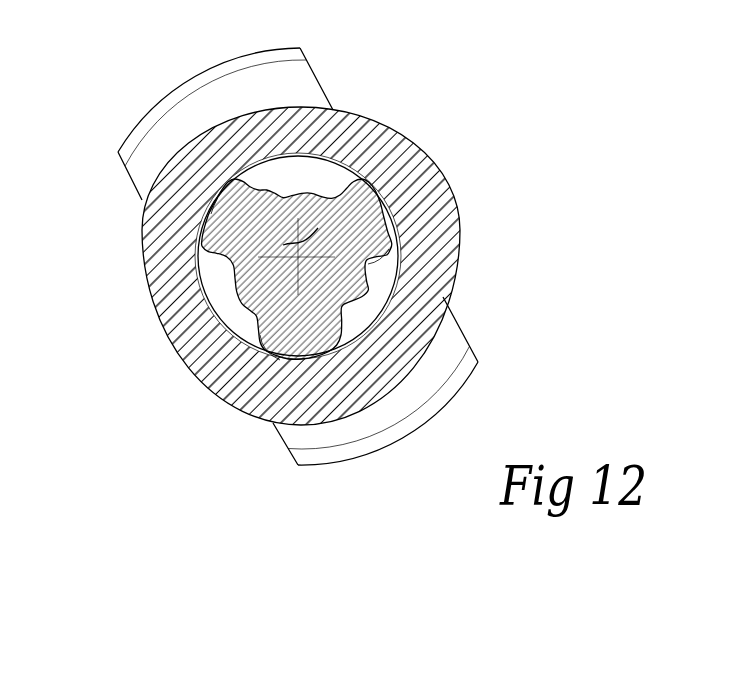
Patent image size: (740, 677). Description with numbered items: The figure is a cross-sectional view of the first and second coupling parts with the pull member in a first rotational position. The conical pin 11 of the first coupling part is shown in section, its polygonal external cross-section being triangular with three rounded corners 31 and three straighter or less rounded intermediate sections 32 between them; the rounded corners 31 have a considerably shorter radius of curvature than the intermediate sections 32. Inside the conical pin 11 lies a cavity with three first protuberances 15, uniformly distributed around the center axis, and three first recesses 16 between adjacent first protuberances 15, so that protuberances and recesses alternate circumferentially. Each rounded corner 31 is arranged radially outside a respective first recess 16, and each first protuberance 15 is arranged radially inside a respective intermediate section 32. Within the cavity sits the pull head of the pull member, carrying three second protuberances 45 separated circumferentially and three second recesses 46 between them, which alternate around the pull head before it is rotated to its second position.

The conical pin 11 is at (440, 202).
The first protuberances 15 is at (312, 173).
The first recesses 16 is at (236, 198).
The rounded corners 31 is at (154, 168).
The intermediate sections 32 is at (300, 107).
The second protuberances 45 is at (372, 215).
The second recesses 46 is at (297, 196).